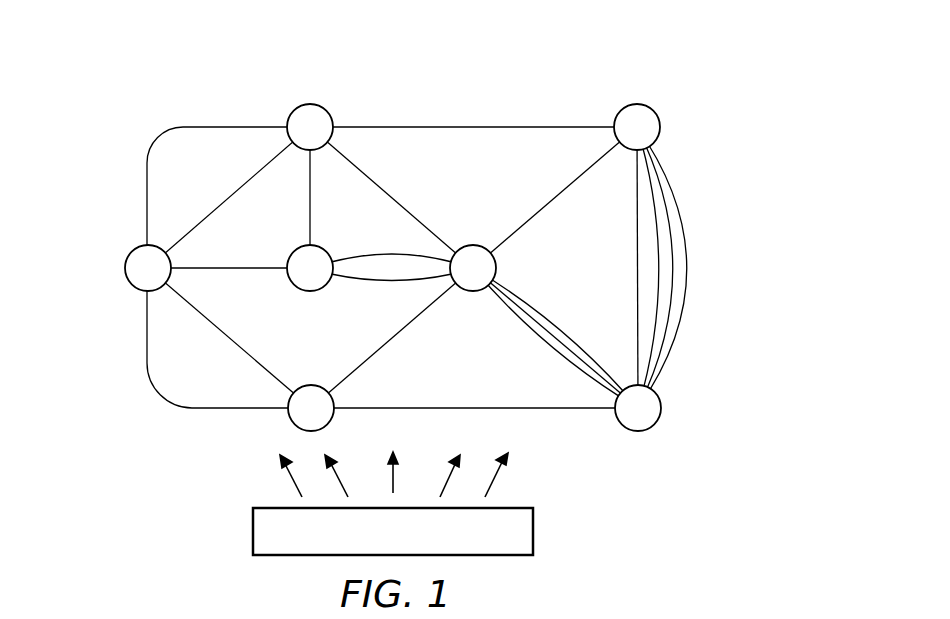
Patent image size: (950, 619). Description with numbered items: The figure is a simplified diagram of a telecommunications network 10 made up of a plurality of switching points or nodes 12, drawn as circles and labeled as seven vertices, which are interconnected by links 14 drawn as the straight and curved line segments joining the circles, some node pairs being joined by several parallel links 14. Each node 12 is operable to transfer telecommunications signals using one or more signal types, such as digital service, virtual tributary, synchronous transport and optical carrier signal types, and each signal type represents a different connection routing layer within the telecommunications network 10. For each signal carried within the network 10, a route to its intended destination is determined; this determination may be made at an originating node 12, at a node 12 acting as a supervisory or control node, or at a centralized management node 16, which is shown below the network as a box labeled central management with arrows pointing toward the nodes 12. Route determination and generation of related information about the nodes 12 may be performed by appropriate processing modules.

The telecommunications network 10 is at (401, 239).
The node 12 is at (695, 413).
The link 14 is at (473, 125).
The centralized management node 16 is at (533, 528).